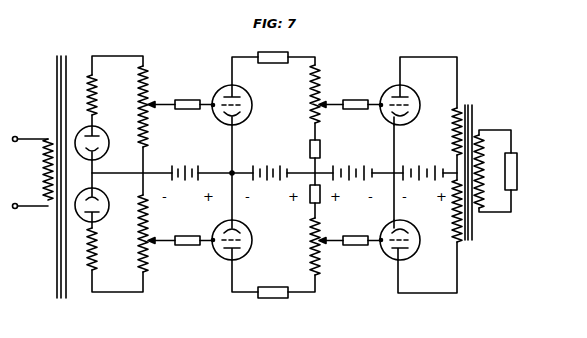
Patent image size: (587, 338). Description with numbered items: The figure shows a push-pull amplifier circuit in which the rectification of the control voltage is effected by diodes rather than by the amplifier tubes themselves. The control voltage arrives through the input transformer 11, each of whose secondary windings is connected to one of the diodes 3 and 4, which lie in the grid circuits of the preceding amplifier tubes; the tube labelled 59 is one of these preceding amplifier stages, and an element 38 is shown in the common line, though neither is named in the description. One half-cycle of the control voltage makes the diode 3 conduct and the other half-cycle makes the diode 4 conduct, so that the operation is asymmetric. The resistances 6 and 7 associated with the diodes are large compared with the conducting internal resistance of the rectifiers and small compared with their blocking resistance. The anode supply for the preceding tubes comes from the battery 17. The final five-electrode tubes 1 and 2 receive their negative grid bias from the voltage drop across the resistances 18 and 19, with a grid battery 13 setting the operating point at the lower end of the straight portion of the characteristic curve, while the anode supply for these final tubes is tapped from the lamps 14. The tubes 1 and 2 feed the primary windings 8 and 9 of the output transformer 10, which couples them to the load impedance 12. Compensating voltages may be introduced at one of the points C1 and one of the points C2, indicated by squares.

The five-electrode tube 1 is at (404, 105).
The five-electrode tube 2 is at (402, 243).
The diode 3 is at (96, 143).
The diode 4 is at (93, 207).
The resistance 6 is at (147, 106).
The resistance 7 is at (148, 234).
The primary winding 8 is at (450, 131).
The primary winding 9 is at (450, 211).
The output transformer 10 is at (470, 106).
The input transformer 11 is at (61, 298).
The load impedance 12 is at (509, 170).
The grid battery 13 is at (352, 163).
The lamps 14 is at (423, 163).
The battery 17 is at (270, 164).
The resistance 18 is at (308, 94).
The resistance 19 is at (307, 246).
The battery 38 is at (185, 164).
The intermediate tube 59 is at (239, 172).
The compensating-voltage point C1 is at (264, 105).
The compensating-voltage point C2 is at (264, 253).